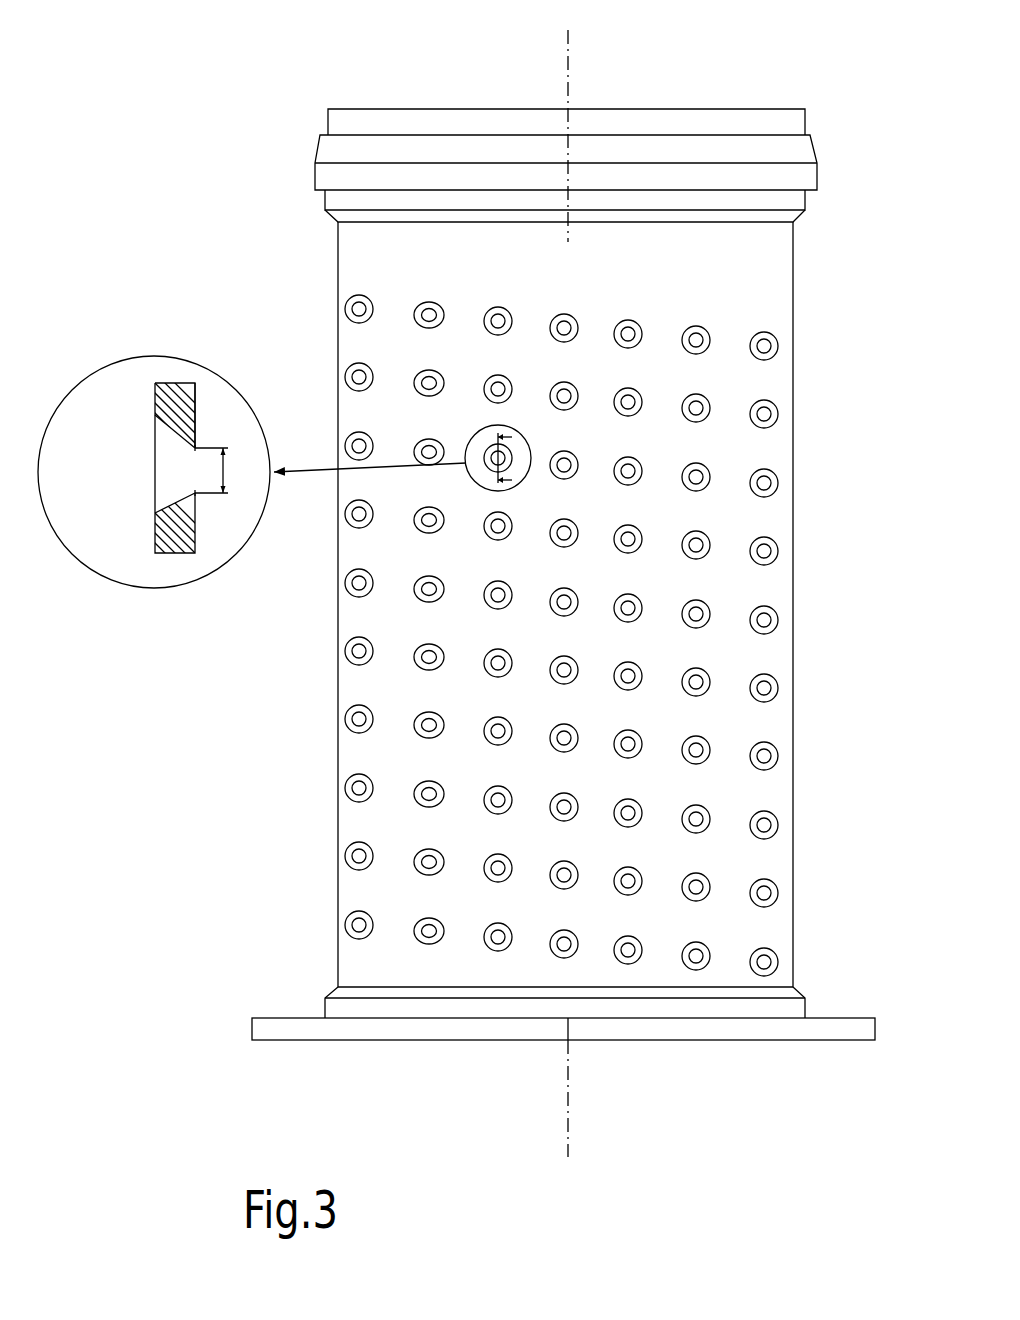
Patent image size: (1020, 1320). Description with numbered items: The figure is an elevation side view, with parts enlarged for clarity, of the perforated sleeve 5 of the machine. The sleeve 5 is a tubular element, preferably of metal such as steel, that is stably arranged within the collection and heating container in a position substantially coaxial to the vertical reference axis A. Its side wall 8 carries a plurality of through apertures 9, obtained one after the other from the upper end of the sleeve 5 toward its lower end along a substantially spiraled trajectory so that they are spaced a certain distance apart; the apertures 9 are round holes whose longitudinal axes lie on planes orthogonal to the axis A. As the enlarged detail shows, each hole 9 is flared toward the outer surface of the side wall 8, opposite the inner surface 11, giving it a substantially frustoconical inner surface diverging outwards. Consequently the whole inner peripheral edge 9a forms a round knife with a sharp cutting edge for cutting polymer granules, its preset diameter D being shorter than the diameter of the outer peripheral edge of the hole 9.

The sleeve 5 is at (809, 99).
The side wall 8 is at (356, 265).
The through apertures 9 is at (770, 409).
The inner peripheral edge 9a is at (198, 456).
The inner surface 11 is at (198, 401).
The vertical reference axis A is at (569, 87).
The preset diameter D is at (220, 470).